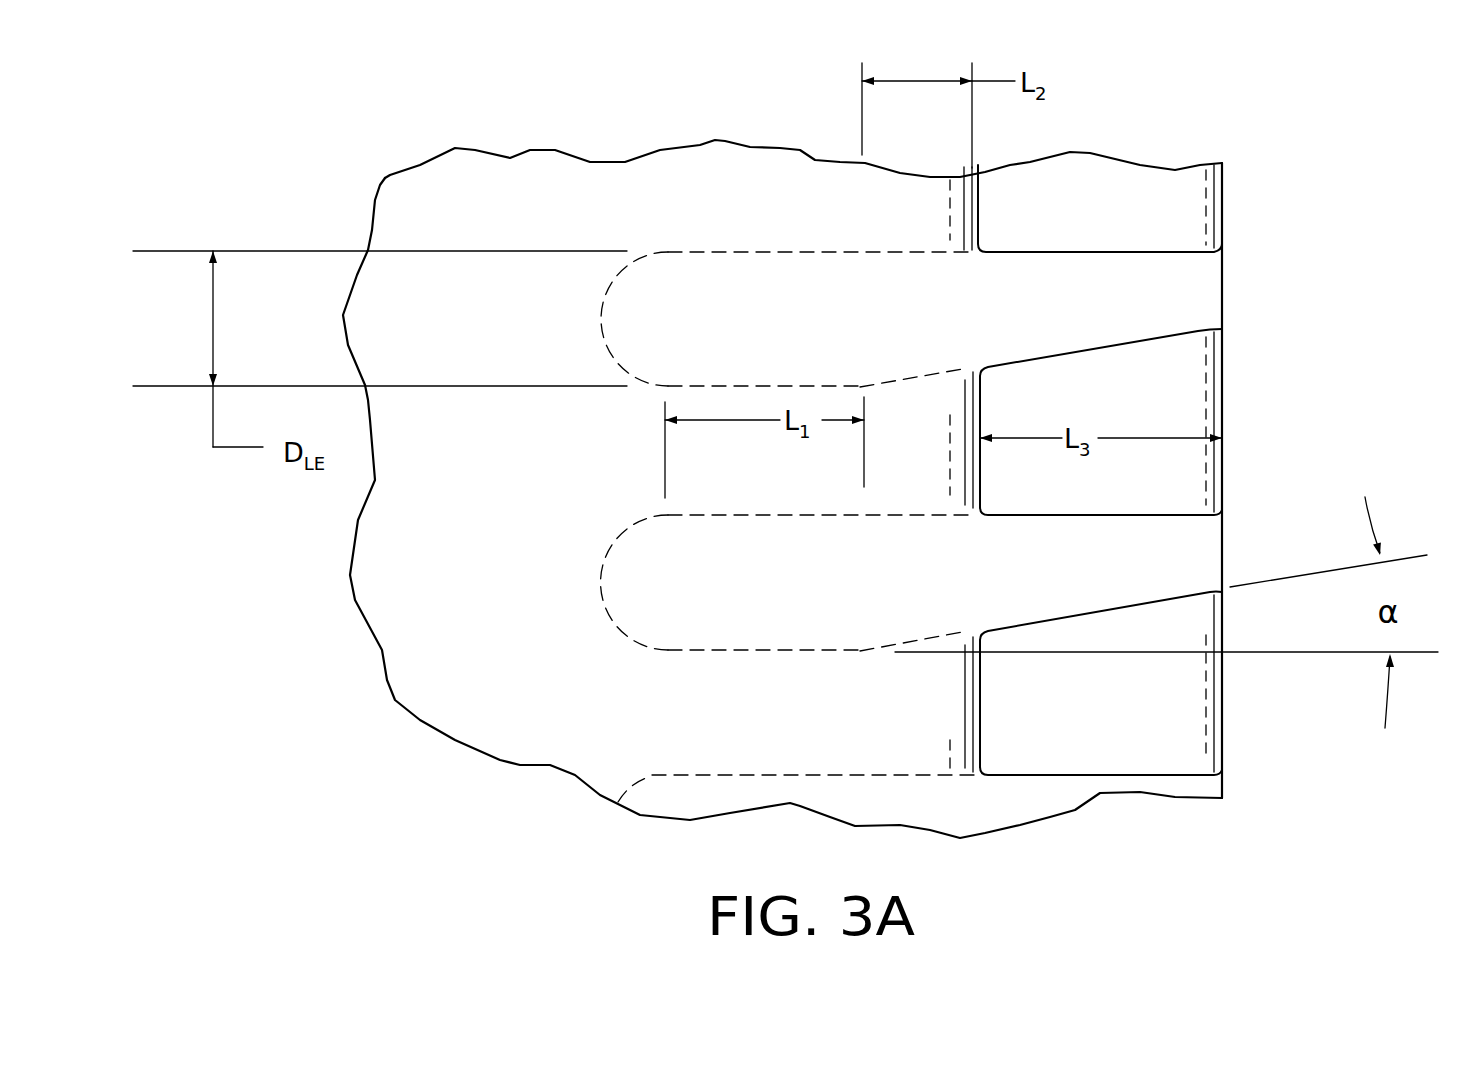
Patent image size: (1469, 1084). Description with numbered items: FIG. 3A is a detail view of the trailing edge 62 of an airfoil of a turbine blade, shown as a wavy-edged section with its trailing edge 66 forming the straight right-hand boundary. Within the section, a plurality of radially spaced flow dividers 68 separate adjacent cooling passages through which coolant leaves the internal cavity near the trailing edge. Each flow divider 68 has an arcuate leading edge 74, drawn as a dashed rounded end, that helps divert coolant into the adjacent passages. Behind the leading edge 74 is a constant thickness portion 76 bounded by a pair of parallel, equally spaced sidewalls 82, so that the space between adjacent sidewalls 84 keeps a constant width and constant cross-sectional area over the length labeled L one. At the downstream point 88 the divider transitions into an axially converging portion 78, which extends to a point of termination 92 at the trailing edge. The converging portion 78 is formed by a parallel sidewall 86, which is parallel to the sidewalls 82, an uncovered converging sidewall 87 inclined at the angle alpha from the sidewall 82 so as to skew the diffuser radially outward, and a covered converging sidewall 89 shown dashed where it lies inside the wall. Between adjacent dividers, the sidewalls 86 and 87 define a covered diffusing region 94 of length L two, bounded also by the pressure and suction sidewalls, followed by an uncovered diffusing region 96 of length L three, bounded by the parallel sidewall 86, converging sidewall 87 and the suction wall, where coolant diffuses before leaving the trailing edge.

The trailing edge 62 is at (1107, 200).
The trailing edge 66 is at (1228, 764).
The flow divider 68 is at (656, 566).
The leading edge 74 is at (600, 318).
The constant thickness portion 76 is at (727, 388).
The converging portion 78 is at (1050, 355).
The sidewalls 82 is at (748, 253).
The space between adjacent sidewalls 84 is at (719, 246).
The parallel sidewall 86 is at (1063, 257).
The uncovered converging sidewall 87 is at (1085, 345).
The downstream point 88 is at (865, 390).
The covered converging sidewall 89 is at (904, 378).
The point of termination 92 is at (1222, 330).
The covered diffusing region 94 is at (978, 658).
The uncovered diffusing region 96 is at (1218, 658).